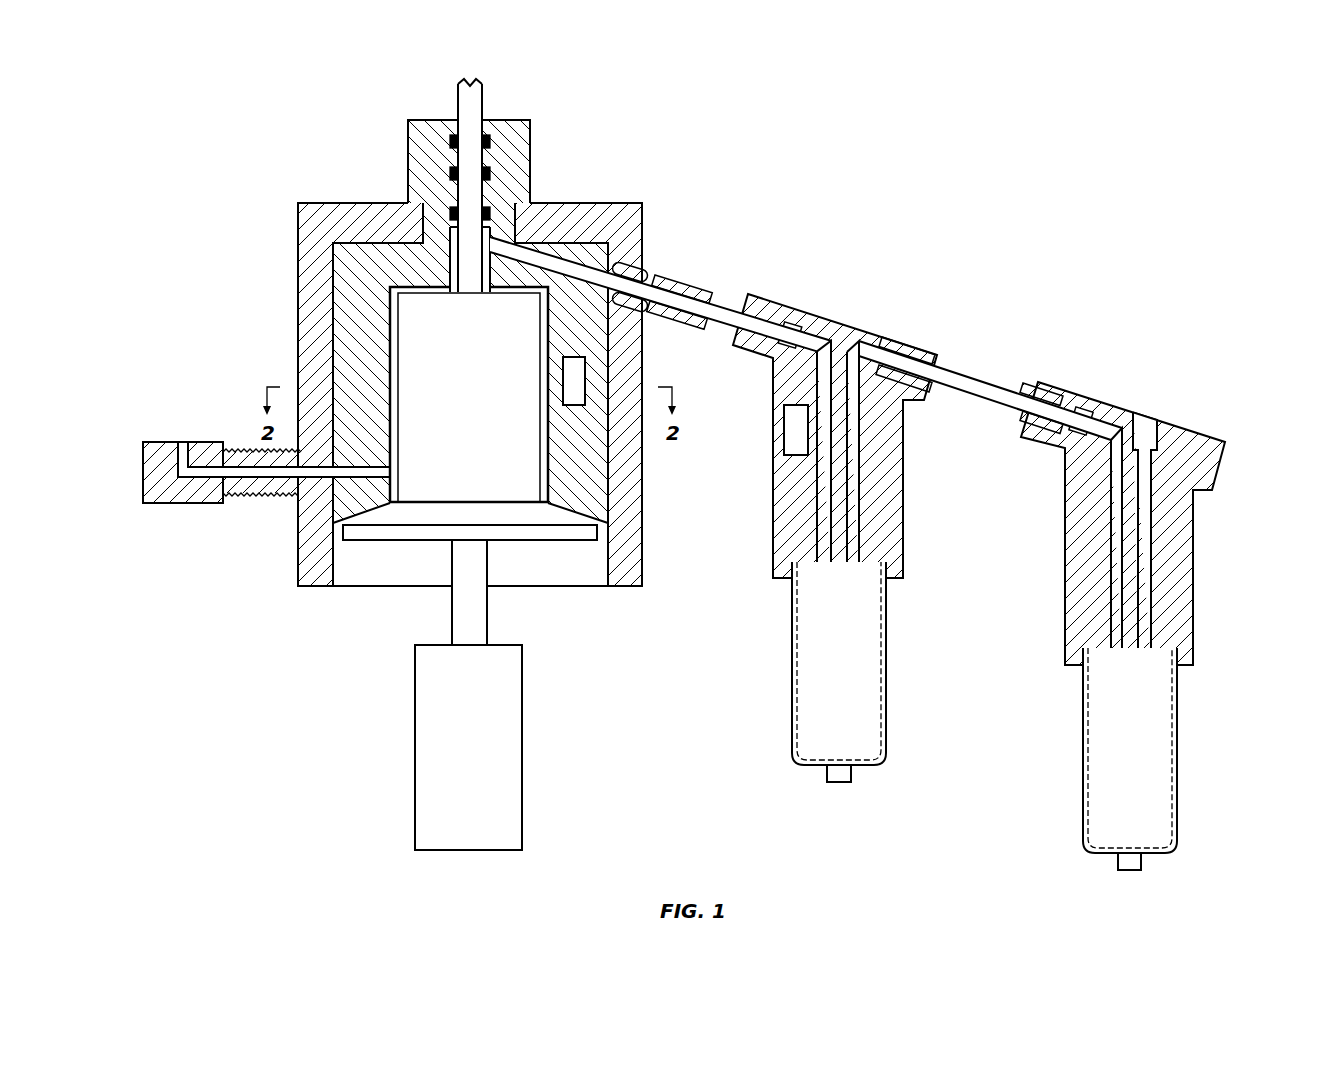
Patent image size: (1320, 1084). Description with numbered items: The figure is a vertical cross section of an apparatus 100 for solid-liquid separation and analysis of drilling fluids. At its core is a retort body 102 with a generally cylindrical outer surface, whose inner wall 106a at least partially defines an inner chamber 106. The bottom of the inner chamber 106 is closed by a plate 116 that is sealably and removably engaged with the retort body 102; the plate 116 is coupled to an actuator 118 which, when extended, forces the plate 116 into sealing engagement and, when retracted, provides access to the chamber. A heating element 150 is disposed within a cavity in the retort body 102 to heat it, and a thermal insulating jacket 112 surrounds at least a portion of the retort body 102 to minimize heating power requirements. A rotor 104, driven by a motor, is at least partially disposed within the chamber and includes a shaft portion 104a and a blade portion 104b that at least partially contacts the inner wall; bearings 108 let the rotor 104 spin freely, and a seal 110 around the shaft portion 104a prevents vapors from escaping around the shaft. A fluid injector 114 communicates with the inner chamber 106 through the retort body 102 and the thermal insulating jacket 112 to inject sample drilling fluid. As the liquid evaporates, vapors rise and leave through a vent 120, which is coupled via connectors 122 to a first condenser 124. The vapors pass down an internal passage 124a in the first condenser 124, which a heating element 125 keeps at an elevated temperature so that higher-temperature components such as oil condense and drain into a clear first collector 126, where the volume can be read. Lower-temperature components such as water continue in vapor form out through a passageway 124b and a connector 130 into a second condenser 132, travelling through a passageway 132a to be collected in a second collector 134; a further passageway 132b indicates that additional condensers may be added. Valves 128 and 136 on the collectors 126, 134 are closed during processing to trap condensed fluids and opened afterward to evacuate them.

The apparatus 100 is at (858, 218).
The retort body 102 is at (331, 287).
The rotor 104 is at (450, 243).
The shaft portion 104a is at (484, 100).
The blade portion 104b is at (400, 342).
The inner chamber 106 is at (541, 460).
The inner wall 106a is at (385, 395).
The bearings 108 is at (494, 214).
The seal 110 is at (492, 172).
The thermal insulating jacket 112 is at (628, 205).
The fluid injector 114 is at (143, 466).
The plate 116 is at (395, 543).
The actuator 118 is at (415, 746).
The vent 120 is at (492, 238).
The connectors 122 is at (690, 286).
The first condenser 124 is at (882, 323).
The internal passage 124a is at (818, 500).
The passageway 124b is at (860, 455).
The heating element 125 is at (785, 432).
The first collector 126 is at (792, 727).
The valve 128 is at (841, 783).
The connector 130 is at (992, 380).
The second condenser 132 is at (1195, 530).
The passageway 132a is at (1112, 580).
The passageway 132b is at (1148, 588).
The second collector 134 is at (1178, 773).
The valve 136 is at (1135, 872).
The heating element 150 is at (586, 378).